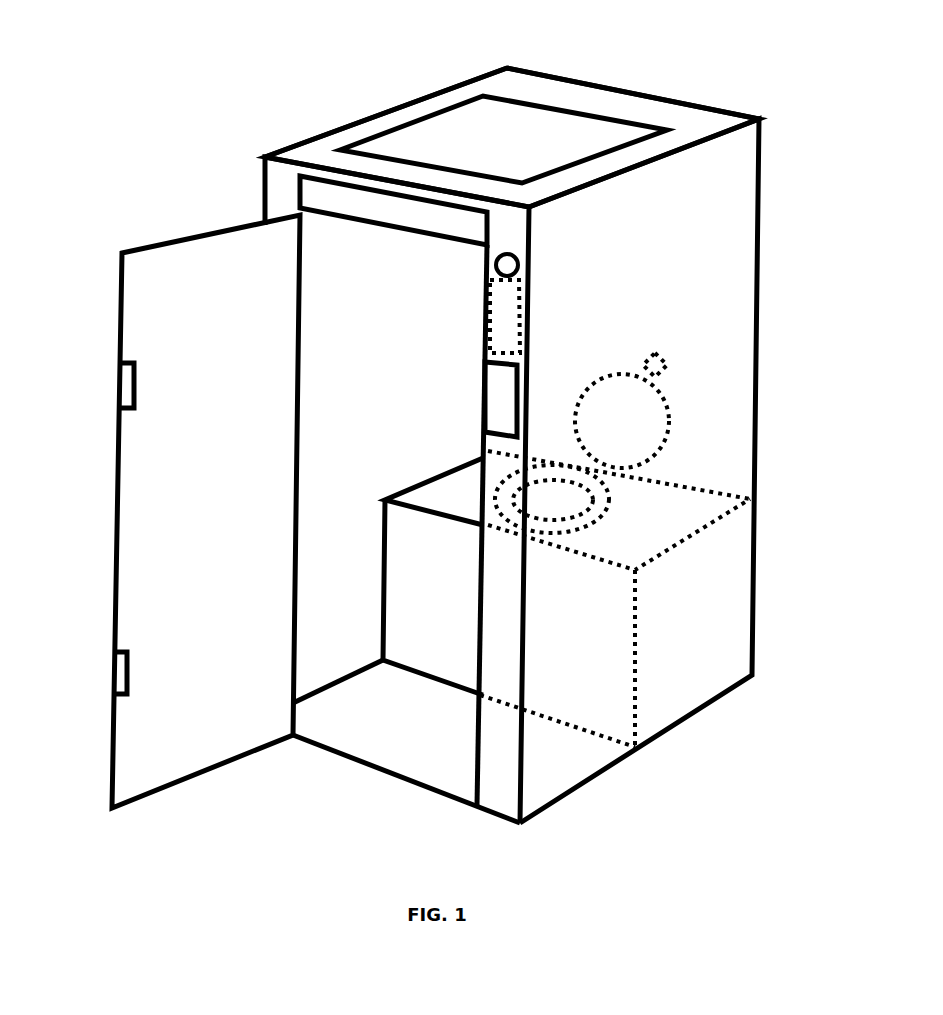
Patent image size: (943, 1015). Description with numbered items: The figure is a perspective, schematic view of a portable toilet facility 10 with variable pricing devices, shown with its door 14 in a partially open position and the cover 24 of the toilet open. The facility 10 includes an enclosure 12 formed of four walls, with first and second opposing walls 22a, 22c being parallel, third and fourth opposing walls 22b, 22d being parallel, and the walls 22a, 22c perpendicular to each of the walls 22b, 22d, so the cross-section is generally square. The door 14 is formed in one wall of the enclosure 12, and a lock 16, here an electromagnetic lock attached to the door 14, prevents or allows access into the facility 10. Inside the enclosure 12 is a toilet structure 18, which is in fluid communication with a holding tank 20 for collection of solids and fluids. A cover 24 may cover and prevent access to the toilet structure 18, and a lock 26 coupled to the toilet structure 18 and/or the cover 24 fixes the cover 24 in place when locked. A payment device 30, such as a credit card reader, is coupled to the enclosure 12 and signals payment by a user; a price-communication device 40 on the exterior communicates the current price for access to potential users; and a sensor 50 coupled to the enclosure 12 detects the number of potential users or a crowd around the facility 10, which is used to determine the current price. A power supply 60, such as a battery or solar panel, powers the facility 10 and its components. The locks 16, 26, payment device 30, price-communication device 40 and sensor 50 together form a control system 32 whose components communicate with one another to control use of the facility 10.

The portable toilet facility 10 is at (583, 60).
The enclosure 12 is at (397, 782).
The door 14 is at (143, 340).
The lock 16 is at (112, 386).
The toilet structure 18 is at (615, 513).
The holding tank 20 is at (422, 613).
The first wall 22a is at (277, 208).
The third wall 22b is at (736, 158).
The second wall 22c is at (670, 95).
The fourth wall 22d is at (424, 94).
The cover 24 is at (628, 433).
The lock 26 is at (670, 370).
The payment device 30 is at (498, 388).
The control system 32 is at (510, 320).
The price-communication device 40 is at (306, 189).
The sensor 50 is at (508, 264).
The power supply 60 is at (448, 135).